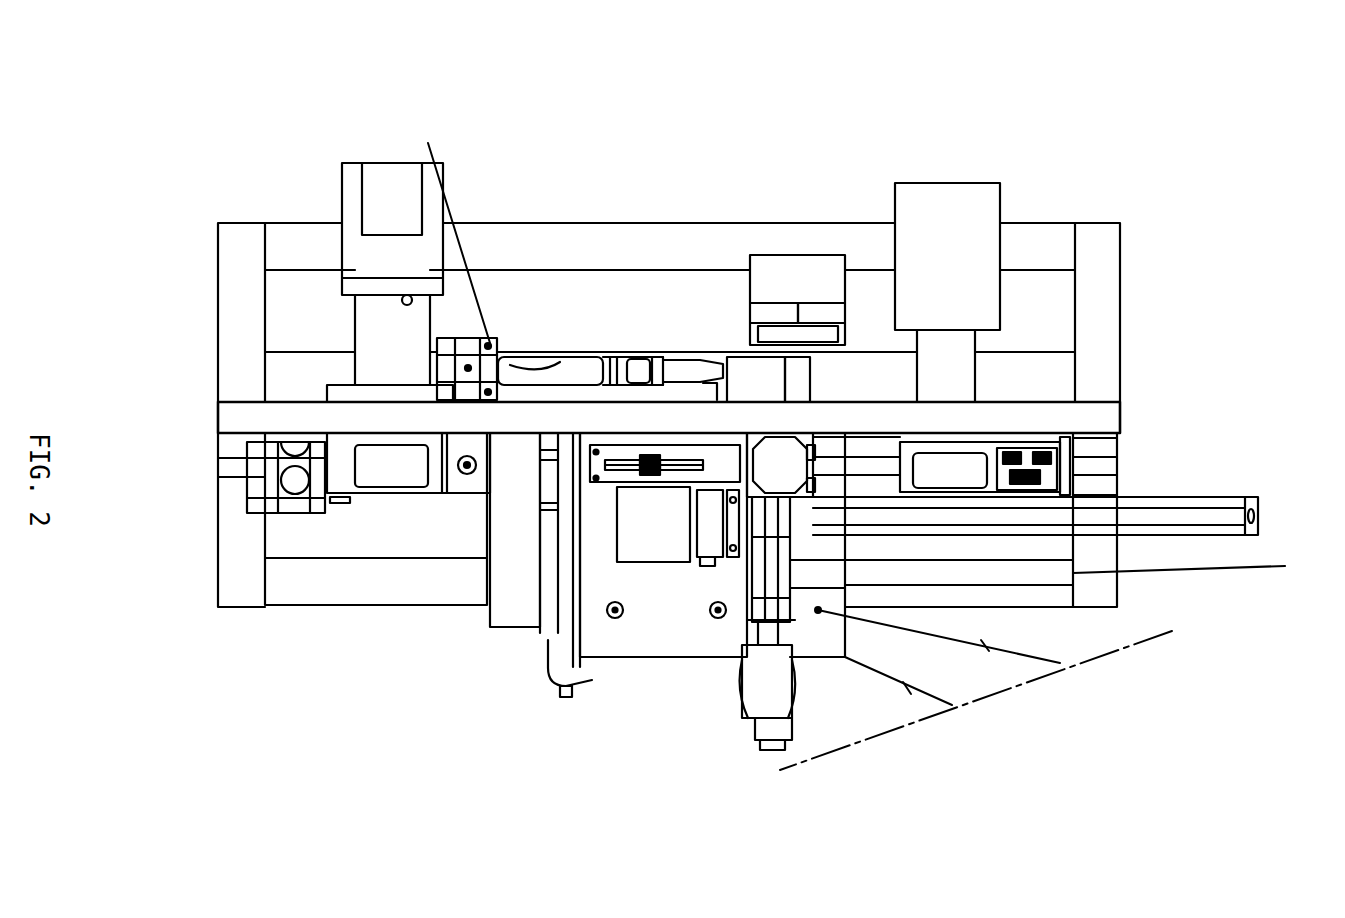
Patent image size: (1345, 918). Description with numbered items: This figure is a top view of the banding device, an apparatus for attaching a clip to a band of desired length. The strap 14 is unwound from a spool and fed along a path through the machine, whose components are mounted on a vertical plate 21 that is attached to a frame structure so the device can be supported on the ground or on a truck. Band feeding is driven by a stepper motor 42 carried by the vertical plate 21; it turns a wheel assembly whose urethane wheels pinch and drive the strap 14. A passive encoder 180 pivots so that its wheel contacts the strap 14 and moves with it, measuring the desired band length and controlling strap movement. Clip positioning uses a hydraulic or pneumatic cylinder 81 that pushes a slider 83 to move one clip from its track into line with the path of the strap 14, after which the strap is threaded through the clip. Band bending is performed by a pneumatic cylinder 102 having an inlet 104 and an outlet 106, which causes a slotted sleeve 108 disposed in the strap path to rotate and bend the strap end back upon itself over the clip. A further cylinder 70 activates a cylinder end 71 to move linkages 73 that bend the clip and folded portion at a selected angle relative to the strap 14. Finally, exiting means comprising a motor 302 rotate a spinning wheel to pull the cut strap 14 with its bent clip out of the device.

The strap 14 is at (1098, 468).
The vertical plate 21 is at (1103, 410).
The stepper motor 42 is at (392, 246).
The cylinder 70 is at (568, 368).
The cylinder end 71 is at (686, 365).
The linkages 73 is at (733, 372).
The pneumatic cylinder 81 is at (788, 708).
The slider 83 is at (767, 572).
The pneumatic cylinder 102 is at (782, 285).
The inlet 104 is at (780, 315).
The outlet 106 is at (812, 313).
The slotted sleeve 108 is at (790, 380).
The passive encoder 180 is at (650, 520).
The motor 302 is at (958, 275).